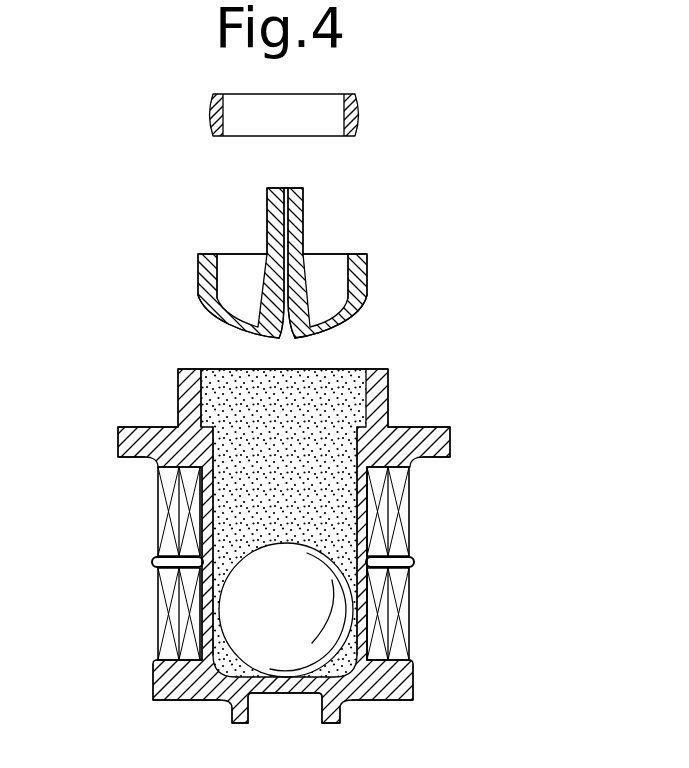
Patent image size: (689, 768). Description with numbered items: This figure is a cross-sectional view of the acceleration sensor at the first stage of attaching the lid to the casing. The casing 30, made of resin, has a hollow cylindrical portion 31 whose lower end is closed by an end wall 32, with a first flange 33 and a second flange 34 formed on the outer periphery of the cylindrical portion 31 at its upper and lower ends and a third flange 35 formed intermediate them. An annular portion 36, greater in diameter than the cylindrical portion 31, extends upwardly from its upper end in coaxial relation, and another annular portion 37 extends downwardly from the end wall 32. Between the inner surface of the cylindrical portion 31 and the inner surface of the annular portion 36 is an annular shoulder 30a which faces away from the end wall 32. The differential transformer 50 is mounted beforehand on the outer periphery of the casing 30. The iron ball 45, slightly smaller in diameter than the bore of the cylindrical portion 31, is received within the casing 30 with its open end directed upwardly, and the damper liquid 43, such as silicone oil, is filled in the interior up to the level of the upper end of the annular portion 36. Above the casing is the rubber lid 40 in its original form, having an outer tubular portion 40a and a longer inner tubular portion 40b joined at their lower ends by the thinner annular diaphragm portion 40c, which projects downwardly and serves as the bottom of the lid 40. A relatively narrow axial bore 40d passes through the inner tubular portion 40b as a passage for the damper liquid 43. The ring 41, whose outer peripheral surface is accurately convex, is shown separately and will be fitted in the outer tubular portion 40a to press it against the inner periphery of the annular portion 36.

The casing 30 is at (435, 420).
The annular shoulder 30a is at (205, 372).
The cylindrical portion 31 is at (362, 523).
The end wall 32 is at (272, 695).
The first flange 33 is at (450, 445).
The second flange 34 is at (413, 680).
The third flange 35 is at (372, 562).
The annular portion 36 is at (388, 385).
The annular portion 37 is at (340, 716).
The lid 40 is at (352, 242).
The outer tubular portion 40a is at (367, 282).
The inner tubular portion 40b is at (305, 212).
The annular diaphragm portion 40c is at (340, 327).
The axial bore 40d is at (284, 244).
The ring 41 is at (362, 108).
The damper liquid 43 is at (337, 487).
The iron ball 45 is at (335, 605).
The differential transformer 50 is at (155, 510).